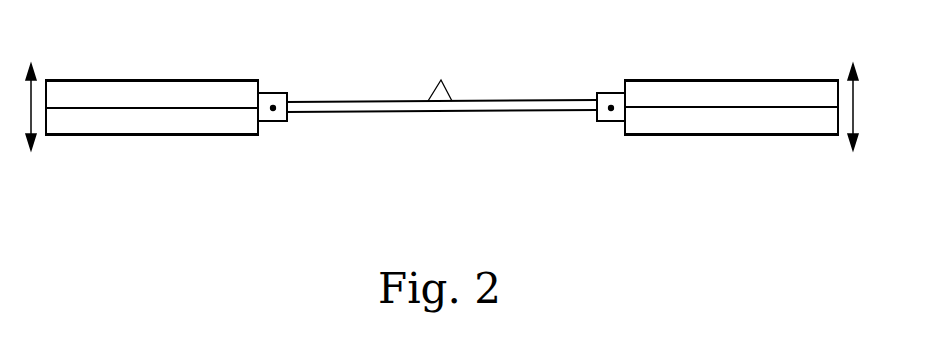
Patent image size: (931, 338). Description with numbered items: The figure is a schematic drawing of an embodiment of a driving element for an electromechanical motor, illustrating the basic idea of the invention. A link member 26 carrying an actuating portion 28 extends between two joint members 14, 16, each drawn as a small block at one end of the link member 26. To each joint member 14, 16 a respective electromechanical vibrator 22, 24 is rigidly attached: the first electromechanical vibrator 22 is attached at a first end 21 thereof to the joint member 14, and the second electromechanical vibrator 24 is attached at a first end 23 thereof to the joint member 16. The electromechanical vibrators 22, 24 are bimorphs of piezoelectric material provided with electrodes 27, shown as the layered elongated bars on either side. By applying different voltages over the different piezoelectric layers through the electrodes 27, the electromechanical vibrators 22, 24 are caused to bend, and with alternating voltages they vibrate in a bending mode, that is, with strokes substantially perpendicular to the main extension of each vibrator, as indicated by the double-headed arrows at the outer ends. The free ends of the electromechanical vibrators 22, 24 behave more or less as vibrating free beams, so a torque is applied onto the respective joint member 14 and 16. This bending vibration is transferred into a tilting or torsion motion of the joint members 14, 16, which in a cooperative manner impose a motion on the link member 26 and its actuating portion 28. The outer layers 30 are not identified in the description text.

The joint member 14 is at (275, 122).
The joint member 16 is at (611, 122).
The first end 21 is at (262, 90).
The first electromechanical vibrator 22 is at (108, 130).
The first end 23 is at (612, 90).
The second electromechanical vibrator 24 is at (708, 130).
The link member 26 is at (504, 108).
The electrodes 27 is at (160, 80).
The actuating portion 28 is at (436, 97).
The electrode 30 is at (103, 88).